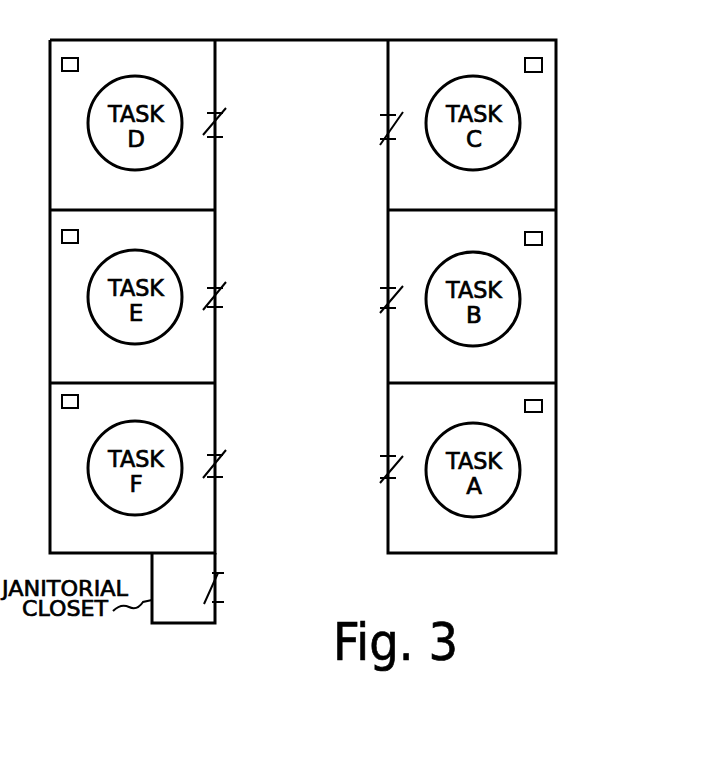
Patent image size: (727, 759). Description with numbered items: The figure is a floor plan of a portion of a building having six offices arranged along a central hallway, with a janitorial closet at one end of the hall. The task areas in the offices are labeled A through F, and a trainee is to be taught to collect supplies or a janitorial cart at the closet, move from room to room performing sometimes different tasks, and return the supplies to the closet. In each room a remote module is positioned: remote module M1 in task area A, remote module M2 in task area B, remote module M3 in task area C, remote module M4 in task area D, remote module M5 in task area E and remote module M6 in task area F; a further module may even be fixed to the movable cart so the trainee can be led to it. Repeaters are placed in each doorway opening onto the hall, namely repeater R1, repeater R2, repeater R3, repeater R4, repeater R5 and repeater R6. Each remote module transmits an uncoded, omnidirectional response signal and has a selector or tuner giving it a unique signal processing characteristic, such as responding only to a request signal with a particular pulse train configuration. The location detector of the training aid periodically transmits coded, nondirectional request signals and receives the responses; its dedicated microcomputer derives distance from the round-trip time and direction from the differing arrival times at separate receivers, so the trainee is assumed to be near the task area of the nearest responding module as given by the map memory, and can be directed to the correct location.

The remote module M1 is at (542, 405).
The remote module M2 is at (542, 238).
The remote module M3 is at (542, 65).
The remote module M4 is at (78, 65).
The remote module M5 is at (78, 237).
The remote module M6 is at (78, 402).
The repeater R1 is at (386, 478).
The repeater R2 is at (386, 309).
The repeater R3 is at (386, 139).
The repeater R4 is at (213, 119).
The repeater R5 is at (213, 294).
The repeater R6 is at (213, 462).